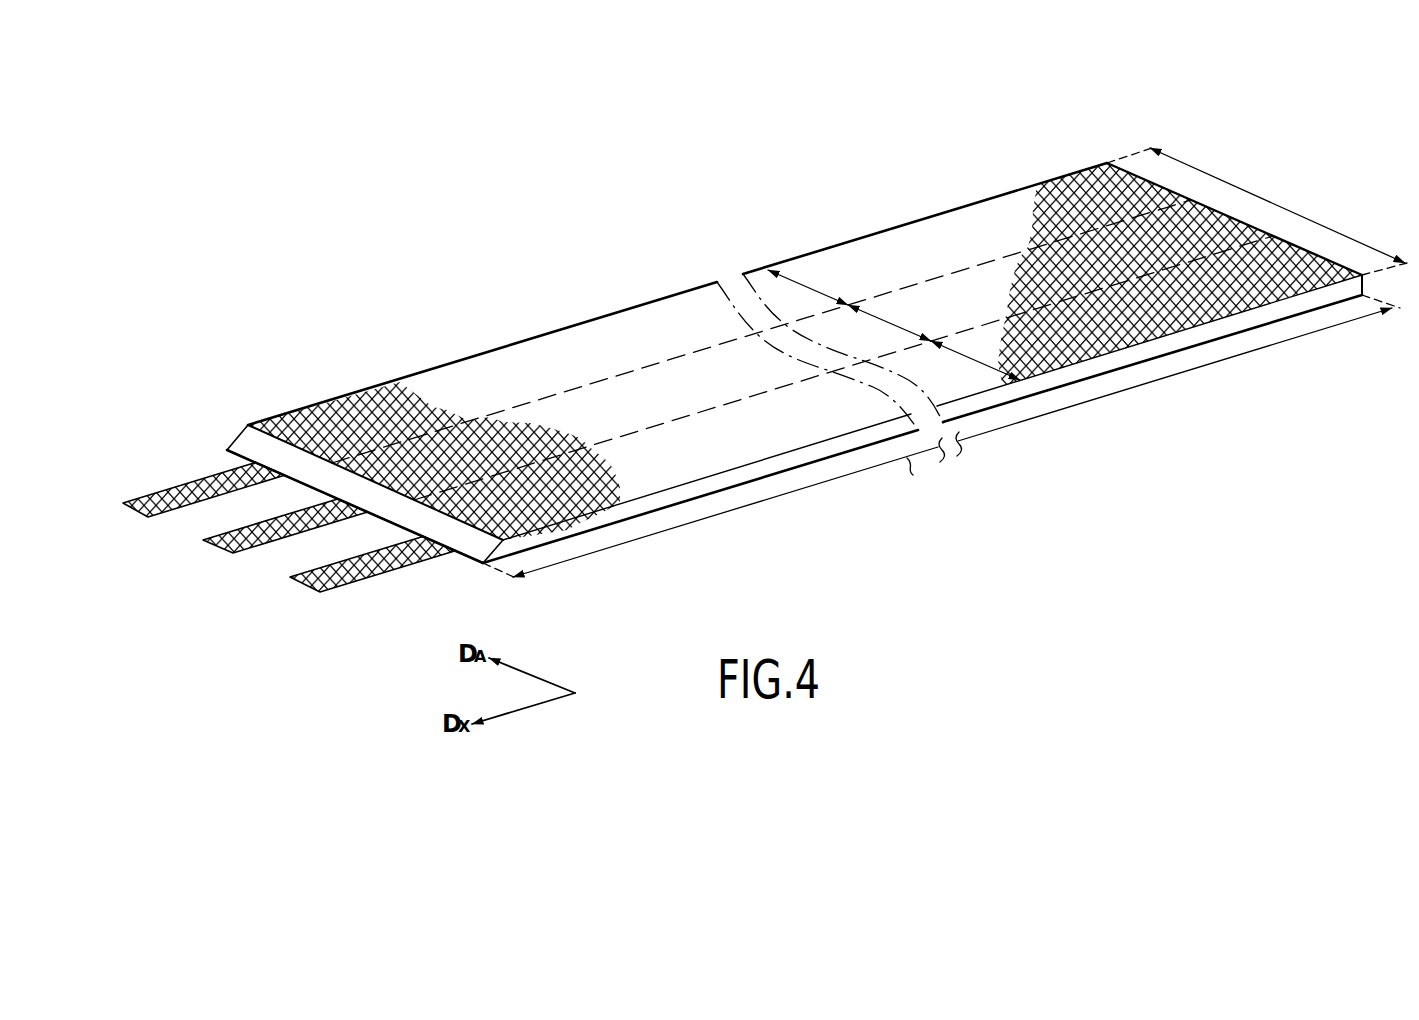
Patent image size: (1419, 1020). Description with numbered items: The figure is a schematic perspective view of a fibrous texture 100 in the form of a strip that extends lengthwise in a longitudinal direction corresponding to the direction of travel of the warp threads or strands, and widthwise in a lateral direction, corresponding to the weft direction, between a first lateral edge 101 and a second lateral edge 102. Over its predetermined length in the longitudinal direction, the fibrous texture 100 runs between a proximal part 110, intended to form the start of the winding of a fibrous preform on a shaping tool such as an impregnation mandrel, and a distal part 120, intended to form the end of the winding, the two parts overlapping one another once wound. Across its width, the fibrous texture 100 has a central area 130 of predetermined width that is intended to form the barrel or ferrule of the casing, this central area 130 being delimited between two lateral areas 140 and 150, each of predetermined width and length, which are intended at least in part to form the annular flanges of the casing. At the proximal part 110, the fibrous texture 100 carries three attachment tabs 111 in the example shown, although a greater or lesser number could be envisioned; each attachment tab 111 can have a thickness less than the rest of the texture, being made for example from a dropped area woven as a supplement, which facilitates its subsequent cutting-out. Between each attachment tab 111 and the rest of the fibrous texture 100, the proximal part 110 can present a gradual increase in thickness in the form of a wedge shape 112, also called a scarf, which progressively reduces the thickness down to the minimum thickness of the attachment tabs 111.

The fibrous texture 100 is at (752, 379).
The first lateral edge 101 is at (675, 497).
The second lateral edge 102 is at (429, 371).
The proximal part 110 is at (304, 507).
The attachment tab 111 is at (157, 507).
The wedge shape 112 is at (243, 443).
The distal part 120 is at (995, 192).
The central area 130 is at (685, 402).
The lateral area 140 is at (757, 447).
The lateral area 150 is at (612, 360).